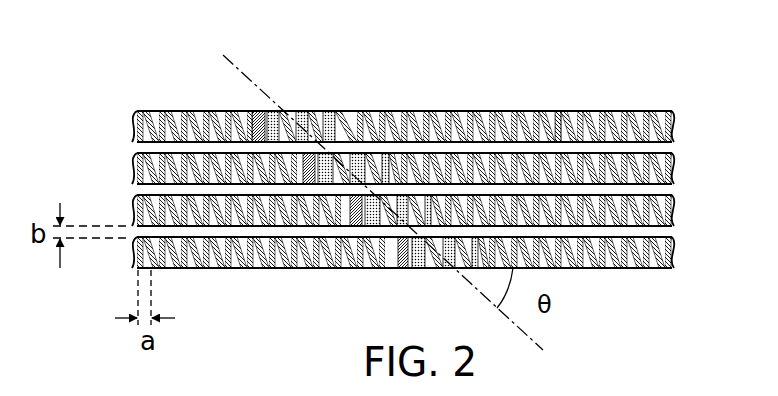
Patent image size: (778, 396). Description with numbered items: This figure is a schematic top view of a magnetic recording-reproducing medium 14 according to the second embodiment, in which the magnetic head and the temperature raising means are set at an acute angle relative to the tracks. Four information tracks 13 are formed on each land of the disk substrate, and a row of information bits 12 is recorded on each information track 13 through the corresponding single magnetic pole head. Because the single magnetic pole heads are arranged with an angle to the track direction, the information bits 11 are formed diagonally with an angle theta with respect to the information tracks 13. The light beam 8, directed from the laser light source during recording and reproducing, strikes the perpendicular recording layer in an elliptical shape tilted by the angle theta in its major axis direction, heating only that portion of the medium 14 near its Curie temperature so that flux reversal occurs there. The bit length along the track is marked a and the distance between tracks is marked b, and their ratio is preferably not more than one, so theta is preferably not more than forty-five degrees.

The light beam 8 is at (247, 111).
The information bit 11 is at (259, 146).
The information bits 12 is at (557, 111).
The information track 13 is at (700, 253).
The recording-reproducing medium 14 is at (447, 234).